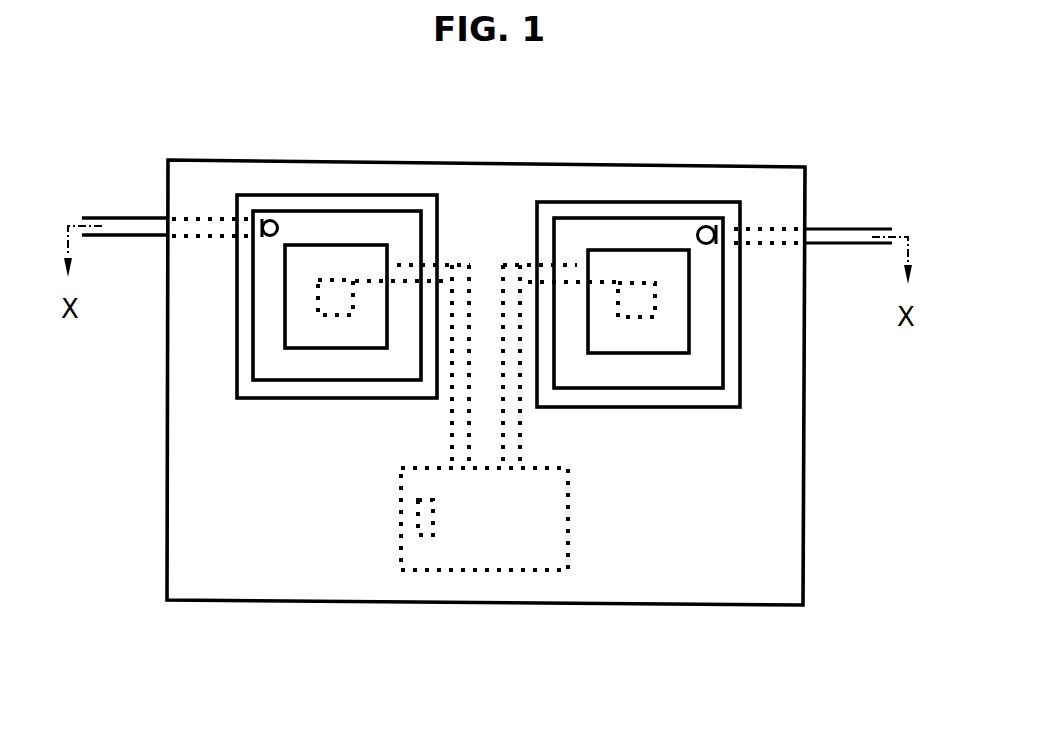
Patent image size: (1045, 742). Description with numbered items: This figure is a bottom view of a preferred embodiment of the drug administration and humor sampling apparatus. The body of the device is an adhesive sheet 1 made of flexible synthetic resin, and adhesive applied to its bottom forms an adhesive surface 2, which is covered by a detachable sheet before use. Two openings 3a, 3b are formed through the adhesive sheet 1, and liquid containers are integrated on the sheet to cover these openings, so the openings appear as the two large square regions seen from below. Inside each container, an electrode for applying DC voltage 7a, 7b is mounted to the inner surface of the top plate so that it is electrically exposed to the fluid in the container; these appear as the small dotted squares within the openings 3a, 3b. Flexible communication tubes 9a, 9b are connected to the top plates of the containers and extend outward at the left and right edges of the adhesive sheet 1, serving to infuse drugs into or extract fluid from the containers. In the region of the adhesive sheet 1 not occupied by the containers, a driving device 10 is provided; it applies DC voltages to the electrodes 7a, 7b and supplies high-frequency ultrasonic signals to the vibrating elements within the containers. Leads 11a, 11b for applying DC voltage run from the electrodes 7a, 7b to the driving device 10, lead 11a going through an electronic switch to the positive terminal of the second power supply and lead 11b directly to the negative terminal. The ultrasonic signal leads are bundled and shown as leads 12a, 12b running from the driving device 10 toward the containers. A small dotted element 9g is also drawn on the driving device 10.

The adhesive sheet 1 is at (805, 515).
The adhesive surface 2 is at (752, 503).
The opening 3a is at (338, 230).
The opening 3b is at (653, 233).
The electrode for applying DC voltage 7a is at (337, 303).
The electrode for applying DC voltage 7b is at (650, 300).
The flexible communication tube 9a is at (118, 215).
The flexible communication tube 9b is at (832, 223).
The ground terminal 9g is at (426, 540).
The driving device 10 is at (535, 543).
The lead for applying DC voltage 11a is at (412, 280).
The lead for applying DC voltage 11b is at (570, 283).
The leads 12a is at (451, 265).
The leads 12b is at (527, 265).